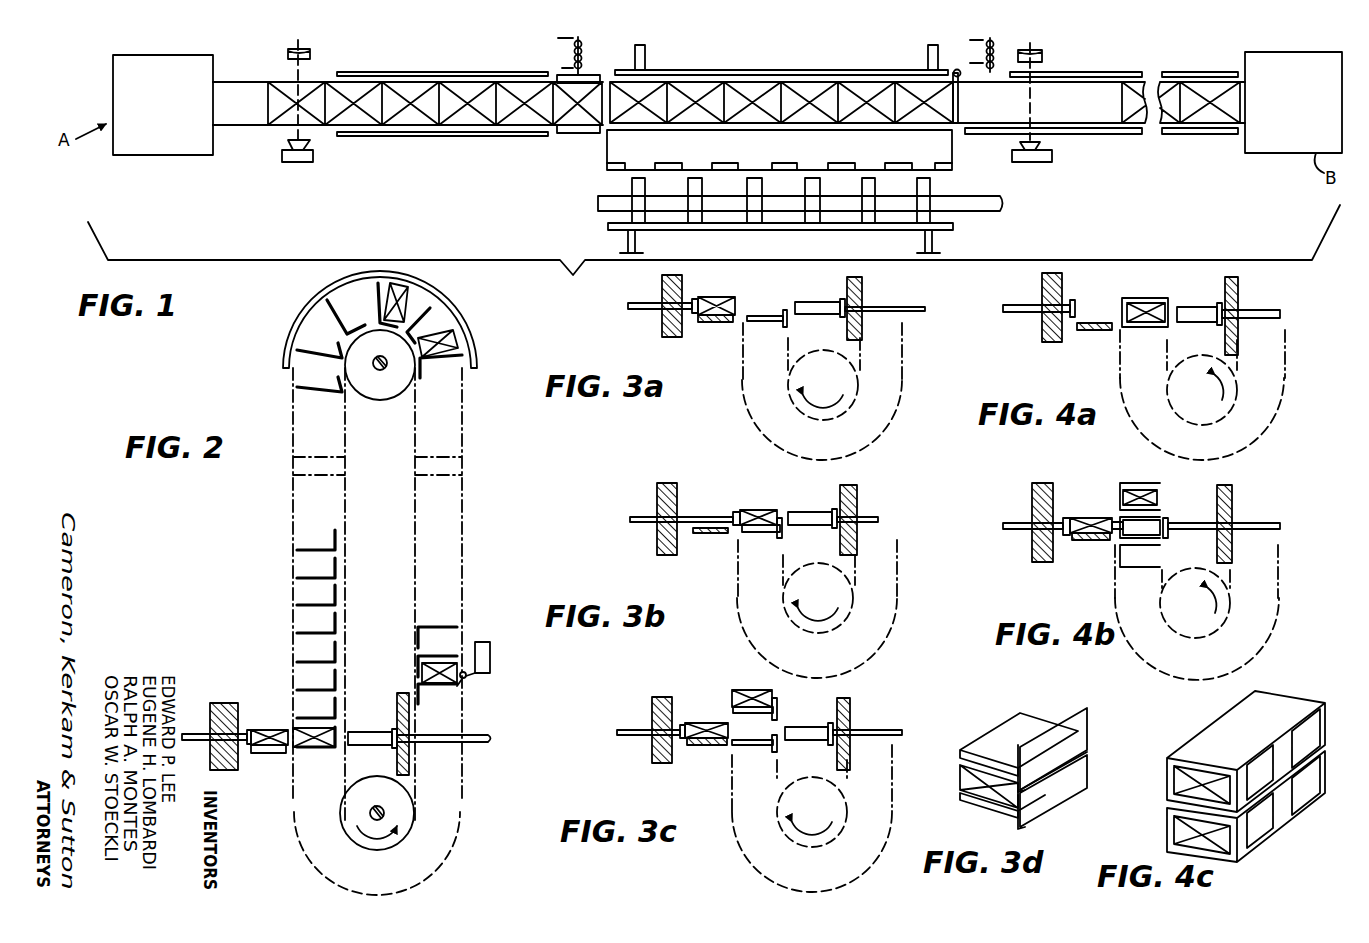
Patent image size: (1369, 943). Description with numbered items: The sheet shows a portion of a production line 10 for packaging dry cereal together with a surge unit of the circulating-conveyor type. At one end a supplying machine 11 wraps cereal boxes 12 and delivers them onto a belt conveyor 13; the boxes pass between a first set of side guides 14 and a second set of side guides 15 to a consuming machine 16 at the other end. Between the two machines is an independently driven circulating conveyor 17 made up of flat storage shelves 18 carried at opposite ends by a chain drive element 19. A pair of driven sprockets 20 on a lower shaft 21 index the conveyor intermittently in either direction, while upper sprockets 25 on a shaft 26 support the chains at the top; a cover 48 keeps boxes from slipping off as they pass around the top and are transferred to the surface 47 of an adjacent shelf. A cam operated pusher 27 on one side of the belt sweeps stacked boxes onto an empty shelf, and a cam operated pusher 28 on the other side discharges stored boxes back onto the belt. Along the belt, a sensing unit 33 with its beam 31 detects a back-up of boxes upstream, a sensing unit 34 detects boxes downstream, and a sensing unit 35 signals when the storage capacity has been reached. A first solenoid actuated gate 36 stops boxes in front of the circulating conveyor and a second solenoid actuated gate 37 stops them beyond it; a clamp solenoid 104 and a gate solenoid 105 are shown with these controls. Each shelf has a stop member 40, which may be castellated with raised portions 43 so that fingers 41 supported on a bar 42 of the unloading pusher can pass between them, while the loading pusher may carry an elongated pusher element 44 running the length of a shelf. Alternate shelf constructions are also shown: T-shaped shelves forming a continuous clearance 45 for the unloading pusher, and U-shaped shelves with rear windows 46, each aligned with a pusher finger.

In FIG. 1, the production line 10 is at (450, 64).
In FIG. 1, the supplying machine 11 is at (163, 105).
In FIG. 1, the boxes 12 is at (510, 118).
In FIG. 2, the boxes 12 is at (410, 290).
In FIG. 3A, the boxes 12 is at (720, 297).
In FIG. 3B, the boxes 12 is at (765, 509).
In FIG. 3C, the boxes 12 is at (735, 693).
In FIG. 3D, the boxes 12 is at (960, 777).
In FIG. 4B, the boxes 12 is at (1090, 518).
In FIG. 1, the belt conveyor 13 is at (243, 127).
In FIG. 2, the belt conveyor 13 is at (267, 755).
In FIG. 3A, the belt conveyor 13 is at (715, 322).
In FIG. 3B, the belt conveyor 13 is at (704, 534).
In FIG. 3C, the belt conveyor 13 is at (715, 745).
In FIG. 4A, the belt conveyor 13 is at (1087, 330).
In FIG. 4B, the belt conveyor 13 is at (1087, 541).
In FIG. 1, the first set of side guides 14 is at (470, 72).
In FIG. 1, the second set of side guides 15 is at (1128, 72).
In FIG. 1, the consuming machine 16 is at (1293, 102).
In FIG. 2, the circulating conveyor 17 is at (468, 445).
In FIG. 1, the storage shelves 18 is at (779, 150).
In FIG. 2, the storage shelves 18 is at (299, 600).
In FIG. 3A, the storage shelves 18 is at (765, 322).
In FIG. 3B, the storage shelves 18 is at (760, 532).
In FIG. 3C, the storage shelves 18 is at (765, 740).
In FIG. 3D, the storage shelves 18 is at (998, 737).
In FIG. 4A, the storage shelves 18 is at (1150, 327).
In FIG. 4B, the storage shelves 18 is at (1138, 567).
In FIG. 4C, the storage shelves 18 is at (1222, 742).
In FIG. 2, the chain drive element 19 is at (415, 521).
In FIG. 3A, the chain drive element 19 is at (790, 338).
In FIG. 3B, the chain drive element 19 is at (854, 585).
In FIG. 3C, the chain drive element 19 is at (837, 773).
In FIG. 4A, the chain drive element 19 is at (1240, 374).
In FIG. 4B, the chain drive element 19 is at (1235, 578).
In FIG. 3A, the driven sprockets 20 is at (822, 391).
In FIG. 3B, the driven sprockets 20 is at (842, 625).
In FIG. 3C, the driven sprockets 20 is at (827, 846).
In FIG. 4A, the driven sprockets 20 is at (1223, 425).
In FIG. 4B, the driven sprockets 20 is at (1223, 630).
In FIG. 1, the shaft 21 is at (596, 202).
In FIG. 2, the sprockets 25 is at (379, 400).
In FIG. 2, the shaft 26 is at (391, 371).
In FIG. 1, the cam operated pusher 27 is at (758, 68).
In FIG. 2, the cam operated pusher 27 is at (191, 730).
In FIG. 3A, the cam operated pusher 27 is at (641, 304).
In FIG. 3B, the cam operated pusher 27 is at (700, 510).
In FIG. 3C, the cam operated pusher 27 is at (630, 728).
In FIG. 4A, the cam operated pusher 27 is at (1022, 298).
In FIG. 4B, the cam operated pusher 27 is at (1011, 510).
In FIG. 1, the cam operated pusher 28 is at (782, 232).
In FIG. 2, the cam operated pusher 28 is at (440, 734).
In FIG. 3A, the cam operated pusher 28 is at (885, 309).
In FIG. 3B, the cam operated pusher 28 is at (857, 519).
In FIG. 3C, the cam operated pusher 28 is at (870, 730).
In FIG. 4A, the cam operated pusher 28 is at (1251, 314).
In FIG. 1, the beam 31 is at (295, 70).
In FIG. 1, the sensing unit 33 is at (310, 52).
In FIG. 1, the sensing unit 34 is at (1044, 56).
In FIG. 2, the sensing unit 35 is at (491, 662).
In FIG. 1, the solenoid actuated gate 36 is at (590, 75).
In FIG. 1, the solenoid actuated gate 37 is at (958, 82).
In FIG. 2, the stop member 40 is at (336, 598).
In FIG. 3D, the stop member 40 is at (1087, 725).
In FIG. 1, the fingers 41 is at (688, 188).
In FIG. 2, the fingers 41 is at (355, 730).
In FIG. 3A, the fingers 41 is at (820, 302).
In FIG. 3B, the fingers 41 is at (810, 512).
In FIG. 3C, the fingers 41 is at (807, 727).
In FIG. 4A, the fingers 41 is at (1197, 307).
In FIG. 4B, the fingers 41 is at (1150, 523).
In FIG. 1, the bar 42 is at (730, 230).
In FIG. 2, the bar 42 is at (398, 718).
In FIG. 3A, the bar 42 is at (858, 284).
In FIG. 3B, the bar 42 is at (854, 490).
In FIG. 3C, the bar 42 is at (843, 734).
In FIG. 4A, the bar 42 is at (1238, 282).
In FIG. 4B, the bar 42 is at (1224, 524).
In FIG. 1, the raised portions 43 is at (670, 163).
In FIG. 1, the elongated pusher element 44 is at (740, 70).
In FIG. 2, the elongated pusher element 44 is at (248, 690).
In FIG. 3A, the elongated pusher element 44 is at (687, 320).
In FIG. 3B, the elongated pusher element 44 is at (734, 526).
In FIG. 3C, the elongated pusher element 44 is at (680, 745).
In FIG. 4A, the elongated pusher element 44 is at (1077, 300).
In FIG. 4B, the elongated pusher element 44 is at (1056, 562).
In FIG. 3D, the clearance 45 is at (1088, 758).
In FIG. 4C, the windows 46 is at (1262, 770).
In FIG. 2, the surface 47 is at (299, 358).
In FIG. 2, the cover 48 is at (302, 302).
In FIG. 1, the clamp solenoid 104 is at (568, 48).
In FIG. 1, the gate solenoid 105 is at (1002, 47).